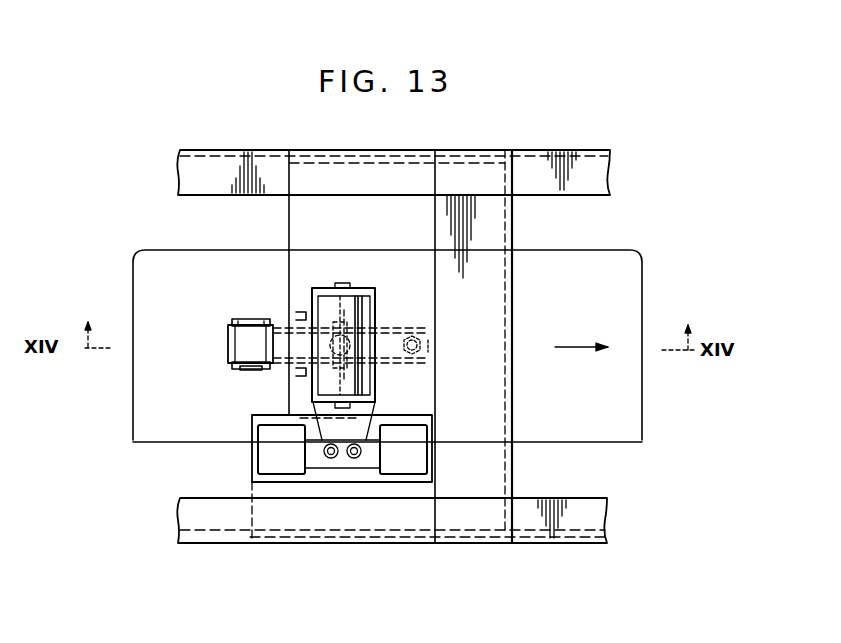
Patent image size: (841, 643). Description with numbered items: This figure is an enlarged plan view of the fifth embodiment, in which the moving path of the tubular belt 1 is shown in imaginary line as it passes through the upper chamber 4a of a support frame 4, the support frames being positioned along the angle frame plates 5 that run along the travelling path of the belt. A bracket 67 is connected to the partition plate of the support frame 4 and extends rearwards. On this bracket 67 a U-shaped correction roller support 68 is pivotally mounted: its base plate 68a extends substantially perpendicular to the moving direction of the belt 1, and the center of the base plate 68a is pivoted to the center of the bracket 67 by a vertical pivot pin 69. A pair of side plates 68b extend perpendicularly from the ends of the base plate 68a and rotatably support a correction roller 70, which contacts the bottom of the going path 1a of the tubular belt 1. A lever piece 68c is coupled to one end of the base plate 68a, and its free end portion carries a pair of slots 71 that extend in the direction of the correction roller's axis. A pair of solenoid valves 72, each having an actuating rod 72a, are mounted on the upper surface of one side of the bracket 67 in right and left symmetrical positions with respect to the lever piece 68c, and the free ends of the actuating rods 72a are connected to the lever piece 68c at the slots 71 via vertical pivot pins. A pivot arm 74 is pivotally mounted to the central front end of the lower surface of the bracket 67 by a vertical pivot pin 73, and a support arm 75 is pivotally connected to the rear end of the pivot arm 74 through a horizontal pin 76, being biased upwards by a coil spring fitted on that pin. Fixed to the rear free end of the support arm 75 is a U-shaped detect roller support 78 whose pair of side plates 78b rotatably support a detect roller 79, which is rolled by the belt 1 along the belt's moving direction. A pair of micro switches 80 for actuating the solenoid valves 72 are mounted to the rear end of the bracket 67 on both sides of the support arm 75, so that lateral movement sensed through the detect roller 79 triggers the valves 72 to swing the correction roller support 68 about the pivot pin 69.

The tubular belt 1 is at (645, 312).
The moving path 1a is at (647, 422).
The support frame 4 is at (514, 226).
The upper chamber 4a is at (513, 480).
The angle frame plates 5 is at (612, 166).
The bracket 67 is at (410, 192).
The correction roller support 68 is at (414, 290).
The base plate 68a is at (378, 304).
The side plates 68b is at (326, 286).
The lever piece 68c is at (378, 411).
The vertical pivot pin 69 is at (337, 356).
The correction roller 70 is at (318, 302).
The slots 71 is at (331, 460).
The solenoid valves 72 is at (262, 455).
The actuating rod 72a is at (313, 482).
The vertical pivot pin 73 is at (422, 344).
The pivot arm 74 is at (422, 354).
The support arm 75 is at (262, 370).
The horizontal pin 76 is at (350, 312).
The detect roller support 78 is at (244, 320).
The side plates 78b is at (236, 322).
The detect roller 79 is at (228, 345).
The micro switches 80 is at (296, 316).